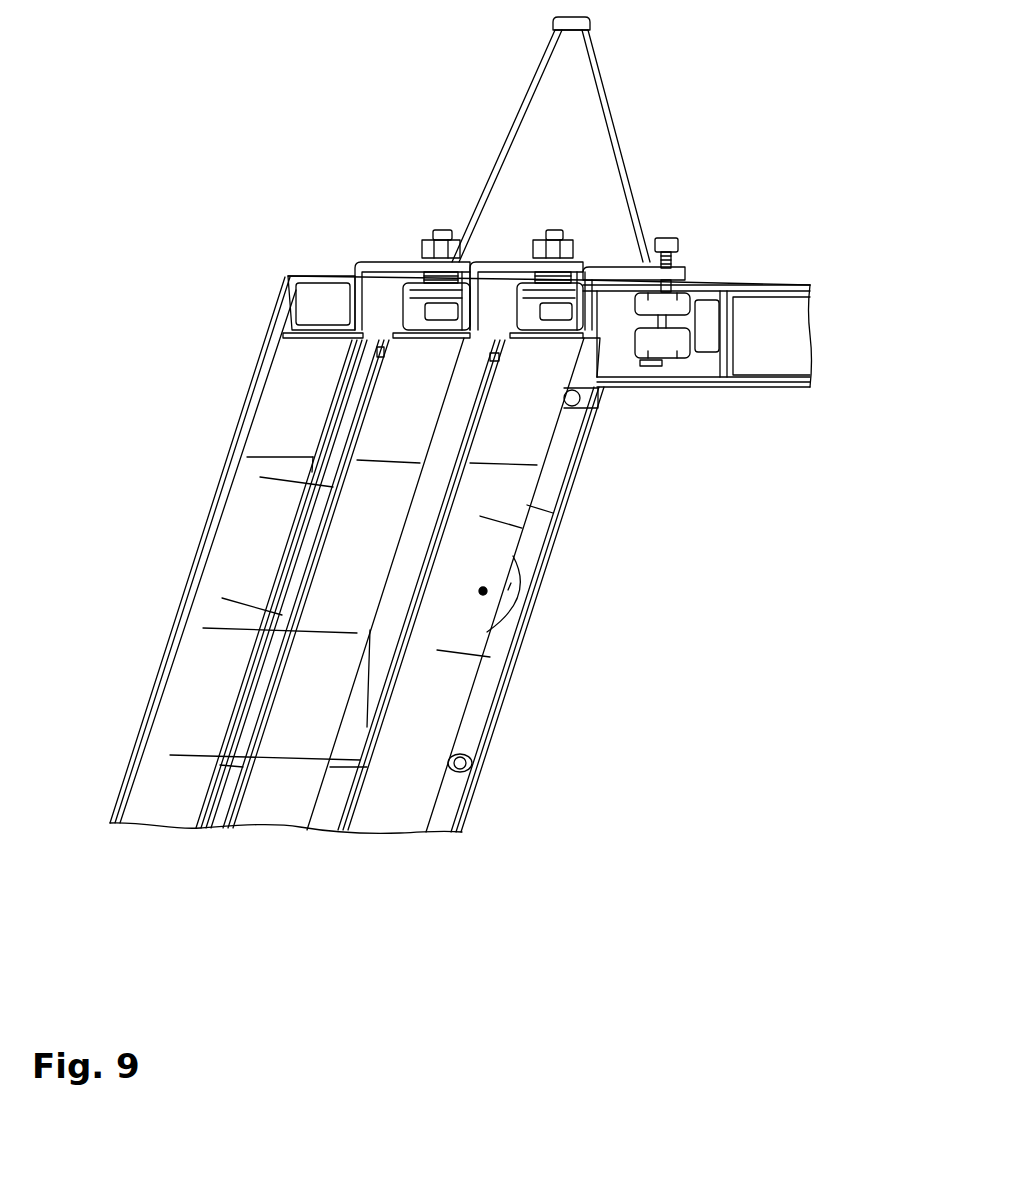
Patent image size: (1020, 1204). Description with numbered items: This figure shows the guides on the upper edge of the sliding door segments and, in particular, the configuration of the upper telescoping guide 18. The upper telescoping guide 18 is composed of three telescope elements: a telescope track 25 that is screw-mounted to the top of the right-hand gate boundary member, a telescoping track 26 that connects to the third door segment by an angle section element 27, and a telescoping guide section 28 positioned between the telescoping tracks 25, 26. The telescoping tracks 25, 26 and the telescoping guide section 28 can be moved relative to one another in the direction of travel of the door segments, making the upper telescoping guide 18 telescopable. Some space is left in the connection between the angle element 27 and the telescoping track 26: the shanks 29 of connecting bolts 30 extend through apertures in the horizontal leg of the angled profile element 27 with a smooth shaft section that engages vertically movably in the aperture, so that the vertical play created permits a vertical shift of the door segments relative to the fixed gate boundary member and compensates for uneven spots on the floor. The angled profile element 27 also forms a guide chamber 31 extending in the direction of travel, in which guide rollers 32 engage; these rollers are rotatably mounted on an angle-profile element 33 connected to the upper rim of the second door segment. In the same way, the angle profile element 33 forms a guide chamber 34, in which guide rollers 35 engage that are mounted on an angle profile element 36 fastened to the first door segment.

The upper telescoping guide 18 is at (730, 272).
The telescope track 25 is at (727, 387).
The telescoping track 26 is at (672, 300).
The angle section element 27 is at (608, 250).
The telescoping guide section 28 is at (690, 330).
The shanks 29 is at (672, 262).
The connecting bolts 30 is at (663, 250).
The guide chamber 31 is at (552, 305).
The guide rollers 32 is at (648, 355).
The angle-profile element 33 is at (500, 250).
The guide chamber 34 is at (433, 323).
The guide rollers 35 is at (460, 303).
The angle profile element 36 is at (378, 250).